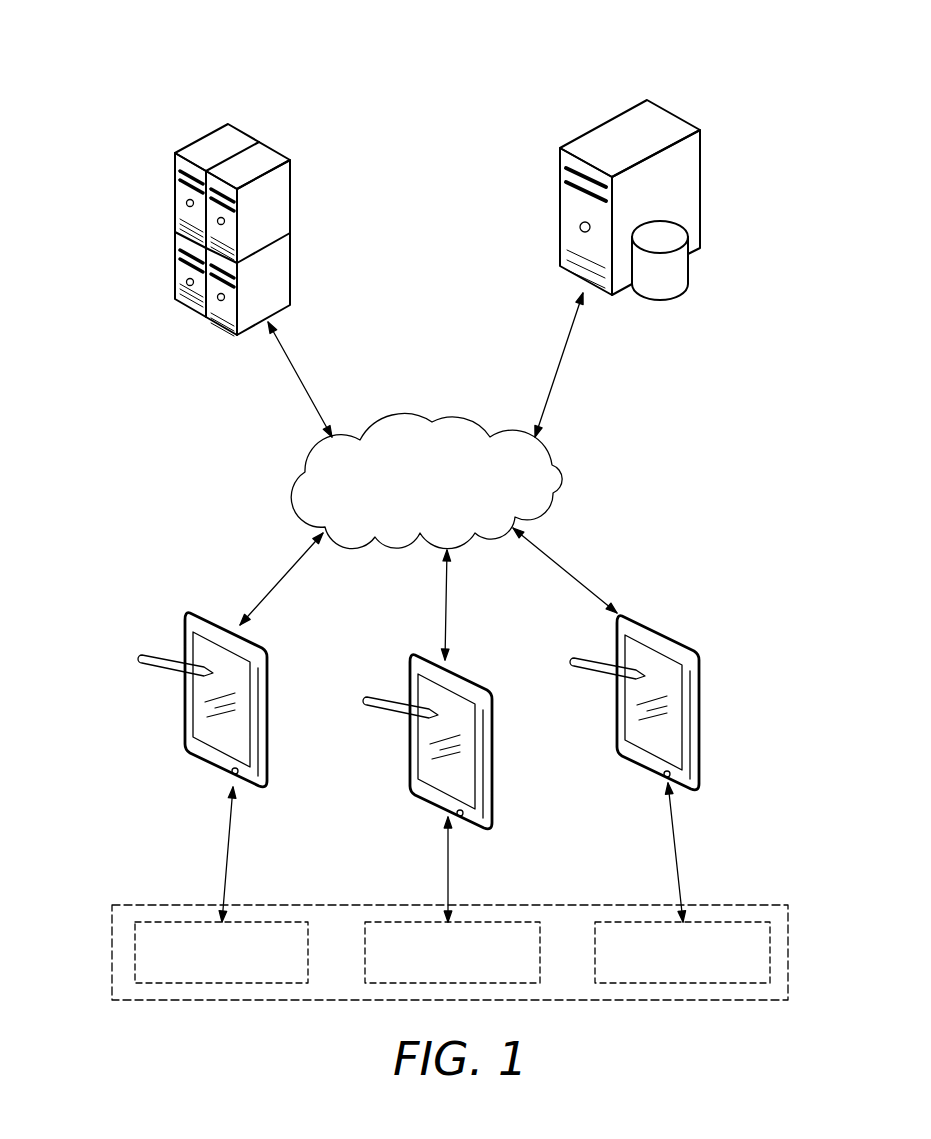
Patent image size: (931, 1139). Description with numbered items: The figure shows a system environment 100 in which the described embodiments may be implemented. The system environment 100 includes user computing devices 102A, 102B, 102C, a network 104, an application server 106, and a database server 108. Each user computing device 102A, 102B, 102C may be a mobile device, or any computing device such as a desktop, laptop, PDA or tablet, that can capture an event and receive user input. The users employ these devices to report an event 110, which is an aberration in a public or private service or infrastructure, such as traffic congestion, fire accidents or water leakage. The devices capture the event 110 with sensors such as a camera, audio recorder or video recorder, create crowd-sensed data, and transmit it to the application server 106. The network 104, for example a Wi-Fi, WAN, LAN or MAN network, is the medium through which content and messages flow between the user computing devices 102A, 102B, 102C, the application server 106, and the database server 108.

The system environment 100 is at (397, 73).
The user computing device 102A is at (190, 613).
The user computing device 102B is at (420, 655).
The user computing device 102C is at (683, 640).
The network 104 is at (564, 479).
The application server 106 is at (175, 228).
The database server 108 is at (702, 190).
The event 110 is at (717, 905).